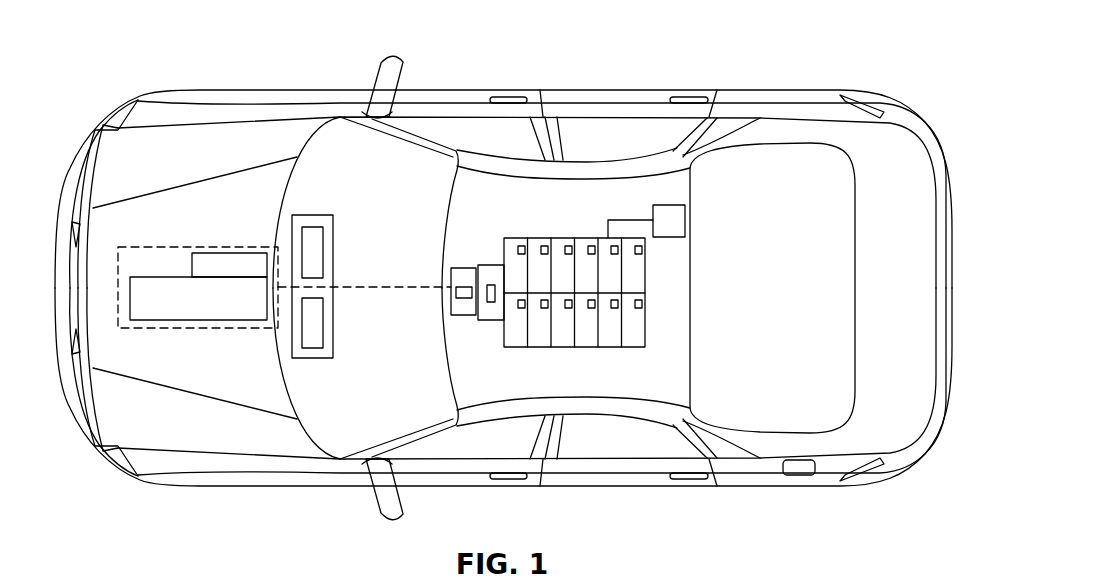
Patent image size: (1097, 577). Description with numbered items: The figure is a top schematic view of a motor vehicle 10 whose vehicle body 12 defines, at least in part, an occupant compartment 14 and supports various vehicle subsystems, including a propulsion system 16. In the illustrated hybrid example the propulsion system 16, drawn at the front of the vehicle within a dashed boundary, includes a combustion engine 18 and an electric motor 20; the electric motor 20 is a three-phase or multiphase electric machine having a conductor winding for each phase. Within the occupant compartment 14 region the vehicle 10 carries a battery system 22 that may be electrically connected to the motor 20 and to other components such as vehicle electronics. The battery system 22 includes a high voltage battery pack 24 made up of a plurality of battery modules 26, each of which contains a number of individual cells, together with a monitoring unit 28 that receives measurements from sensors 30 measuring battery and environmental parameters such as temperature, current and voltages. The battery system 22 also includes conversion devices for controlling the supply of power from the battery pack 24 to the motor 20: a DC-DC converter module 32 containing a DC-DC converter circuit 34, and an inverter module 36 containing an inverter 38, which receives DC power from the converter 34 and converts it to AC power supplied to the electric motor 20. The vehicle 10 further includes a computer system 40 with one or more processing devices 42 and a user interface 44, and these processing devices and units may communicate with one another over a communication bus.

The motor vehicle 10 is at (130, 38).
The vehicle body 12 is at (548, 84).
The occupant compartment 14 is at (596, 406).
The propulsion system 16 is at (158, 246).
The combustion engine 18 is at (222, 321).
The electric motor 20 is at (244, 253).
The battery system 22 is at (524, 366).
The high voltage battery pack 24 is at (646, 262).
The battery modules 26 is at (538, 243).
The monitoring unit 28 is at (686, 220).
The sensors 30 is at (590, 243).
The DC-DC converter module 32 is at (496, 265).
The DC-DC converter circuit 34 is at (492, 302).
The inverter module 36 is at (452, 280).
The inverter 38 is at (456, 291).
The computer system 40 is at (315, 196).
The processing devices 42 is at (323, 323).
The user interface 44 is at (323, 252).